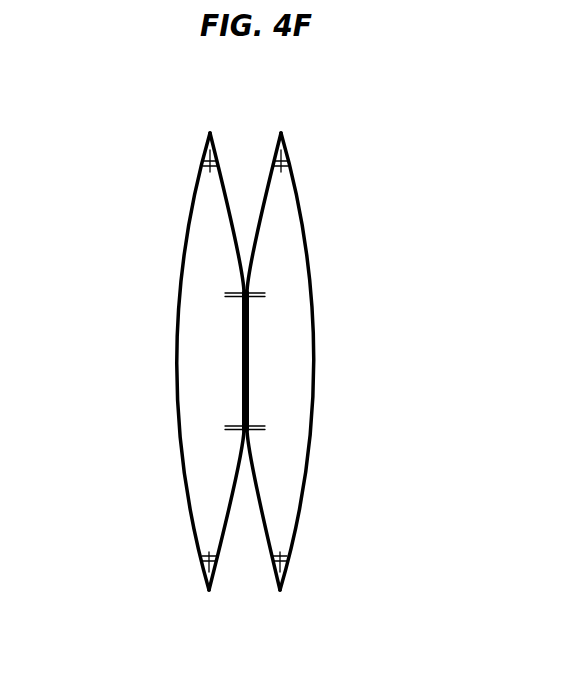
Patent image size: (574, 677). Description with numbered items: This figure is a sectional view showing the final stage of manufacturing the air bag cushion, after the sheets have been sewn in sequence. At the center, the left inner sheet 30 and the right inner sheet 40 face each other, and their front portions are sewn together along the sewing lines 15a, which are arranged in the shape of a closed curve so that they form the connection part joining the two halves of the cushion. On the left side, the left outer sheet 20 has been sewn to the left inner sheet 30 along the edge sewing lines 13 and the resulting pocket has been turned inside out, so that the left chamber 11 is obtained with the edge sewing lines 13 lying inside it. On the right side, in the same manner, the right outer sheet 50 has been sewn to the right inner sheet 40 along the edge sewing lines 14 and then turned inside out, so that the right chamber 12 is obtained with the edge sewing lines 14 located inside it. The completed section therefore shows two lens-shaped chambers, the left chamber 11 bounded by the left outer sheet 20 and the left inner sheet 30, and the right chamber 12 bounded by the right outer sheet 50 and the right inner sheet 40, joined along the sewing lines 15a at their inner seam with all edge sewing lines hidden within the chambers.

The left chamber 11 is at (149, 327).
The right chamber 12 is at (350, 325).
The edge sewing lines 13 is at (204, 160).
The edge sewing lines 14 is at (287, 155).
The sewing lines 15a is at (257, 291).
The left outer sheet 20 is at (177, 298).
The left inner sheet 30 is at (237, 497).
The right inner sheet 40 is at (263, 512).
The right outer sheet 50 is at (313, 410).